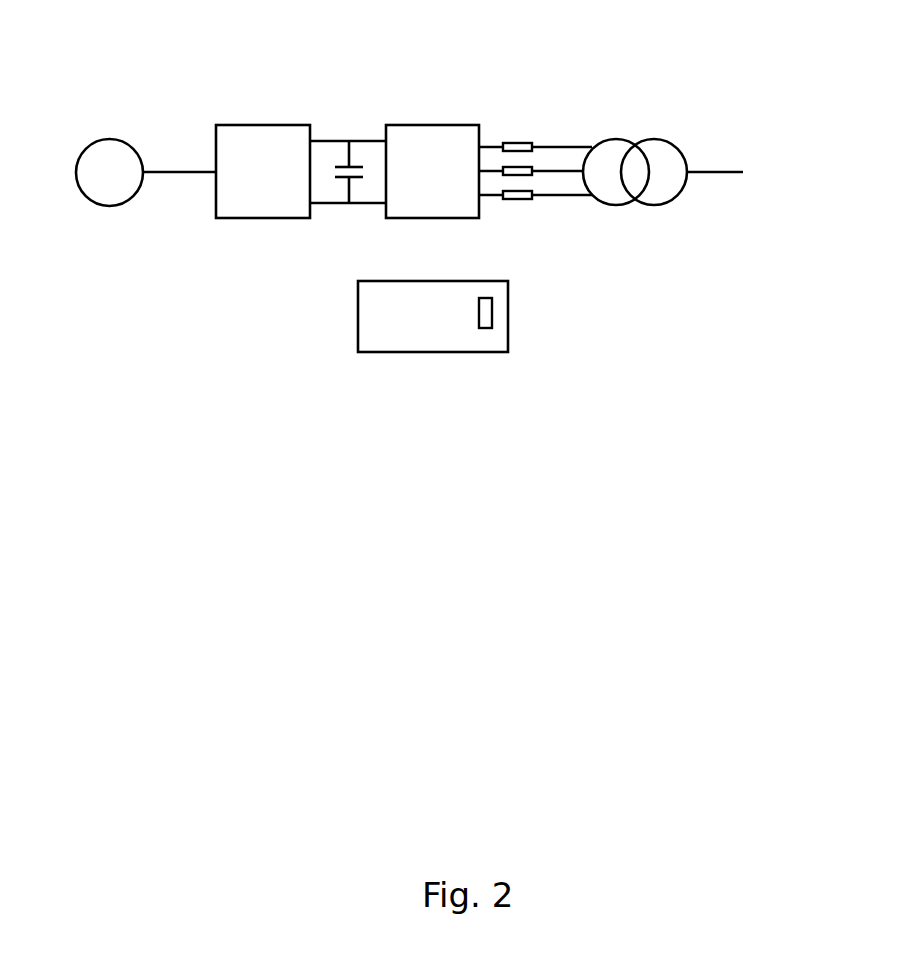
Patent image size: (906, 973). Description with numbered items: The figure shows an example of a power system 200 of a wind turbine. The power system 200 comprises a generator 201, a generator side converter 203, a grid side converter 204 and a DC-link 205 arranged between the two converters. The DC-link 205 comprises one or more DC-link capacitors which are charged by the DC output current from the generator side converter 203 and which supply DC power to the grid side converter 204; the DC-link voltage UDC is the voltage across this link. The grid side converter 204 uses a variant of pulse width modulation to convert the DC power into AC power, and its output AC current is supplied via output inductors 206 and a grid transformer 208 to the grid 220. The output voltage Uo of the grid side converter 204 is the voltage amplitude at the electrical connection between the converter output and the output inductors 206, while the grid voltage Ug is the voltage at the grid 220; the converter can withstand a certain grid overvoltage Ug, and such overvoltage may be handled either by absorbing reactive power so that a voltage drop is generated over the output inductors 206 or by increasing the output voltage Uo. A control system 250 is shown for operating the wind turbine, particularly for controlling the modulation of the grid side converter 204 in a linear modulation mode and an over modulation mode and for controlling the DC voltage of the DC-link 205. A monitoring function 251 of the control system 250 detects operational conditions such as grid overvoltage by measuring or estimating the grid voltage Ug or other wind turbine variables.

The power system 200 is at (241, 59).
The generator 201 is at (98, 138).
The generator side converter 203 is at (243, 124).
The grid side converter 204 is at (420, 125).
The DC-link 205 is at (359, 160).
The output inductors 206 is at (512, 140).
The grid transformer 208 is at (628, 135).
The grid 220 is at (727, 163).
The control system 250 is at (437, 358).
The monitoring function 251 is at (487, 323).
The DC-link voltage UDC is at (343, 183).
The output voltage of the grid side converter Uo is at (492, 203).
The grid voltage Ug is at (572, 204).